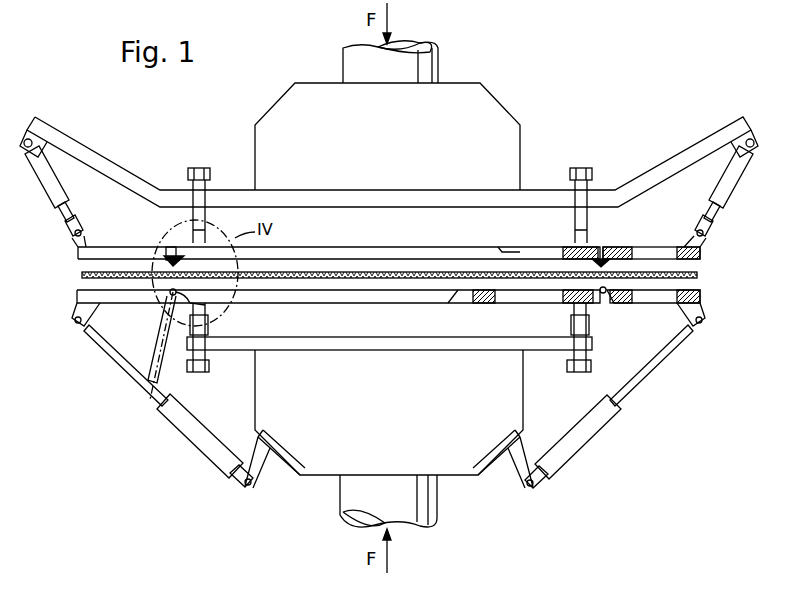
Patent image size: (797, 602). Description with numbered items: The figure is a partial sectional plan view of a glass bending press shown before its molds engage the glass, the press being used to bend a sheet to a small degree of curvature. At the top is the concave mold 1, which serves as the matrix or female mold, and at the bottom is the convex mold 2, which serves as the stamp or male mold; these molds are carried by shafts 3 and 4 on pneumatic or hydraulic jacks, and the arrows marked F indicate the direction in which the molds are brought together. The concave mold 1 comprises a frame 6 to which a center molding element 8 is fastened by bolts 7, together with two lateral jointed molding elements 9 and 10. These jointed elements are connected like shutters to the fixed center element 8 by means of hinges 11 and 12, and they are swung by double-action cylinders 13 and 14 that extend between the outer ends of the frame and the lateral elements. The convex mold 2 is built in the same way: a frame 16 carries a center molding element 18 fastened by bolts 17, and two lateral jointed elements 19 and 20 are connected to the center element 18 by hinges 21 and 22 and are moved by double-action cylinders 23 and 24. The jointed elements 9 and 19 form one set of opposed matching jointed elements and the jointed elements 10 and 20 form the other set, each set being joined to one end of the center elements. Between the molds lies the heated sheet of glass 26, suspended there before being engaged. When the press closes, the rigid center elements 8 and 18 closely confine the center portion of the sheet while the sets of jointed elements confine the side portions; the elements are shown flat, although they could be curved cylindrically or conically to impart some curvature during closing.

The concave mold 1 is at (537, 172).
The convex mold 2 is at (466, 488).
The shaft 3 is at (353, 68).
The shaft 4 is at (350, 498).
The frame 6 is at (603, 195).
The bolts 7 is at (211, 170).
The center molding element 8 is at (423, 253).
The lateral jointed molding element 9 is at (115, 250).
The lateral jointed molding element 10 is at (657, 250).
The hinge 11 is at (172, 251).
The hinge 12 is at (612, 256).
The double-action cylinder 13 is at (66, 206).
The double-action cylinder 14 is at (718, 190).
The frame 16 is at (538, 351).
The bolts 17 is at (205, 373).
The center molding element 18 is at (421, 302).
The lateral jointed element 19 is at (137, 302).
The lateral jointed element 20 is at (655, 303).
The hinge 21 is at (206, 310).
The hinge 22 is at (604, 295).
The double-action cylinder 23 is at (200, 446).
The double-action cylinder 24 is at (592, 442).
The sheet of glass 26 is at (696, 279).